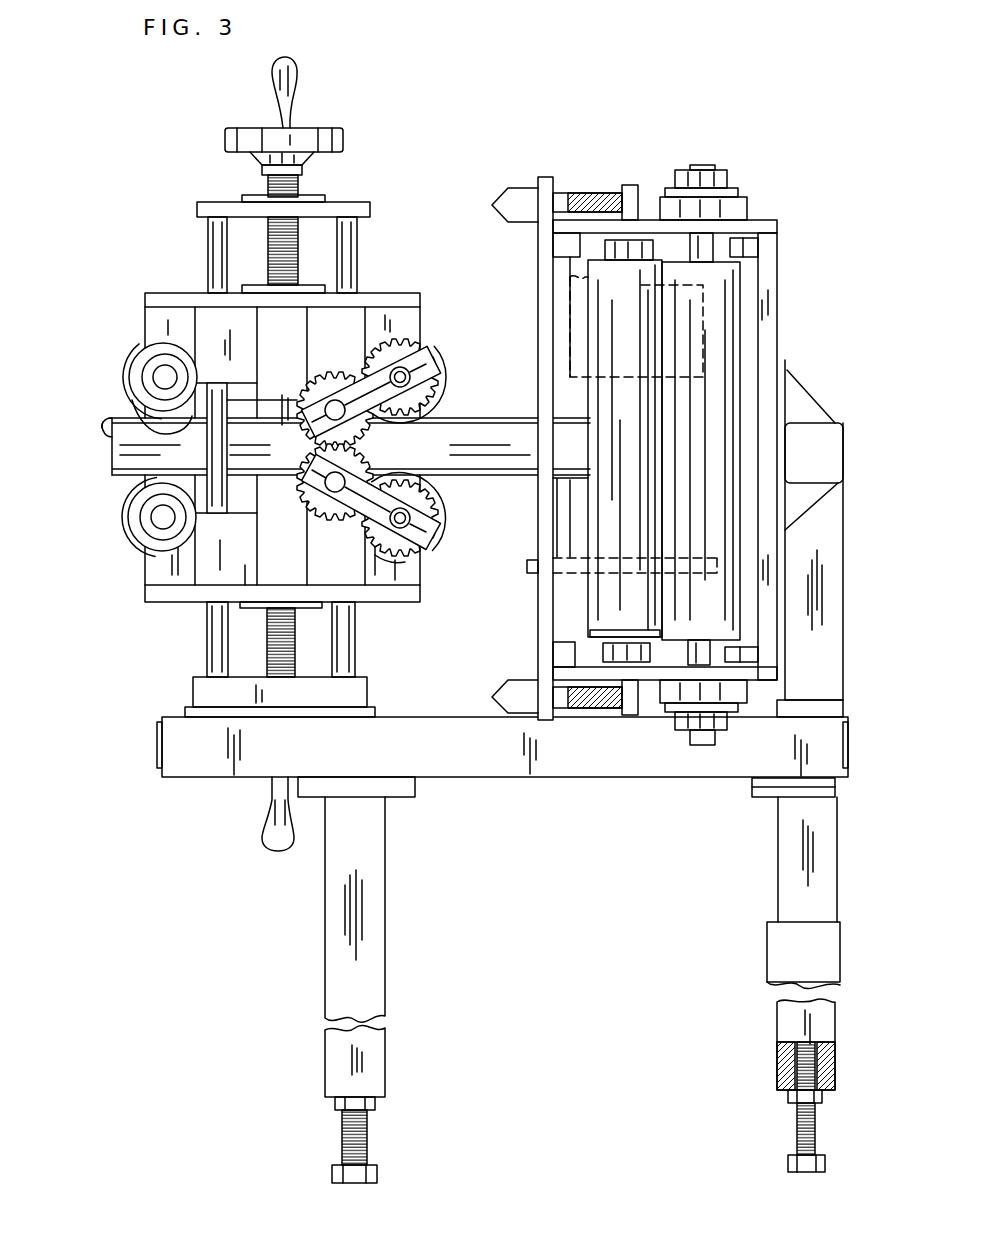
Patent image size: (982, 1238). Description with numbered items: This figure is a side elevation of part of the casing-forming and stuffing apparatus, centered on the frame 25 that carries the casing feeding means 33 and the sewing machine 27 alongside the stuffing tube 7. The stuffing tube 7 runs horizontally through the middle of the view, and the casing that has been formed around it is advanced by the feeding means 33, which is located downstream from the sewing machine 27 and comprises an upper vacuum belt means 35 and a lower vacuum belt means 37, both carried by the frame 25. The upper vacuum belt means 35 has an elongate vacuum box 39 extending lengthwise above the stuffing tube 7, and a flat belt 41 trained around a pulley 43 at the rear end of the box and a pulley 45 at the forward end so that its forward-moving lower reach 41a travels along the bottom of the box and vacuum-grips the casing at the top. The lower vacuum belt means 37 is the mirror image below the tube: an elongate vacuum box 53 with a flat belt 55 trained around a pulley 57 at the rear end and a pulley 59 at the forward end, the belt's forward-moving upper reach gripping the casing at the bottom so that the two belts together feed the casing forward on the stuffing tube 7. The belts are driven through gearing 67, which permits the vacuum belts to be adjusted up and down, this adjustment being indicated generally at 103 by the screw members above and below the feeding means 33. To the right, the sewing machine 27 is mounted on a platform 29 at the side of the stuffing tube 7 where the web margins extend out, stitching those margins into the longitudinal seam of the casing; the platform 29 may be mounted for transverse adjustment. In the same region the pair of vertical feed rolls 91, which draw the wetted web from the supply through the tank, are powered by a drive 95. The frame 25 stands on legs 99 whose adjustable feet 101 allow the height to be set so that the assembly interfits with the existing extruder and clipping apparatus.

The stuffing tube 7 is at (106, 428).
The frame 25 is at (324, 935).
The sewing machine 27 is at (575, 292).
The platform 29 is at (527, 567).
The casing feeding means 33 is at (141, 292).
The upper vacuum belt means 35 is at (123, 357).
The lower vacuum belt means 37 is at (110, 516).
The elongate vacuum box 39 is at (262, 405).
The flat belt 41 is at (438, 382).
The forward-moving lower reach 41a is at (158, 430).
The pulley 43 is at (438, 358).
The pulley 45 is at (136, 355).
The elongate vacuum box 53 is at (290, 490).
The flat belt 55 is at (445, 520).
The pulley 57 is at (440, 540).
The pulley 59 is at (134, 540).
The gearing 67 is at (322, 530).
The vertical feed rolls 91 is at (737, 313).
The drive 95 is at (728, 172).
The legs 99 is at (325, 1062).
The adjustable feet 101 is at (370, 1170).
The adjustment 103 is at (343, 135).